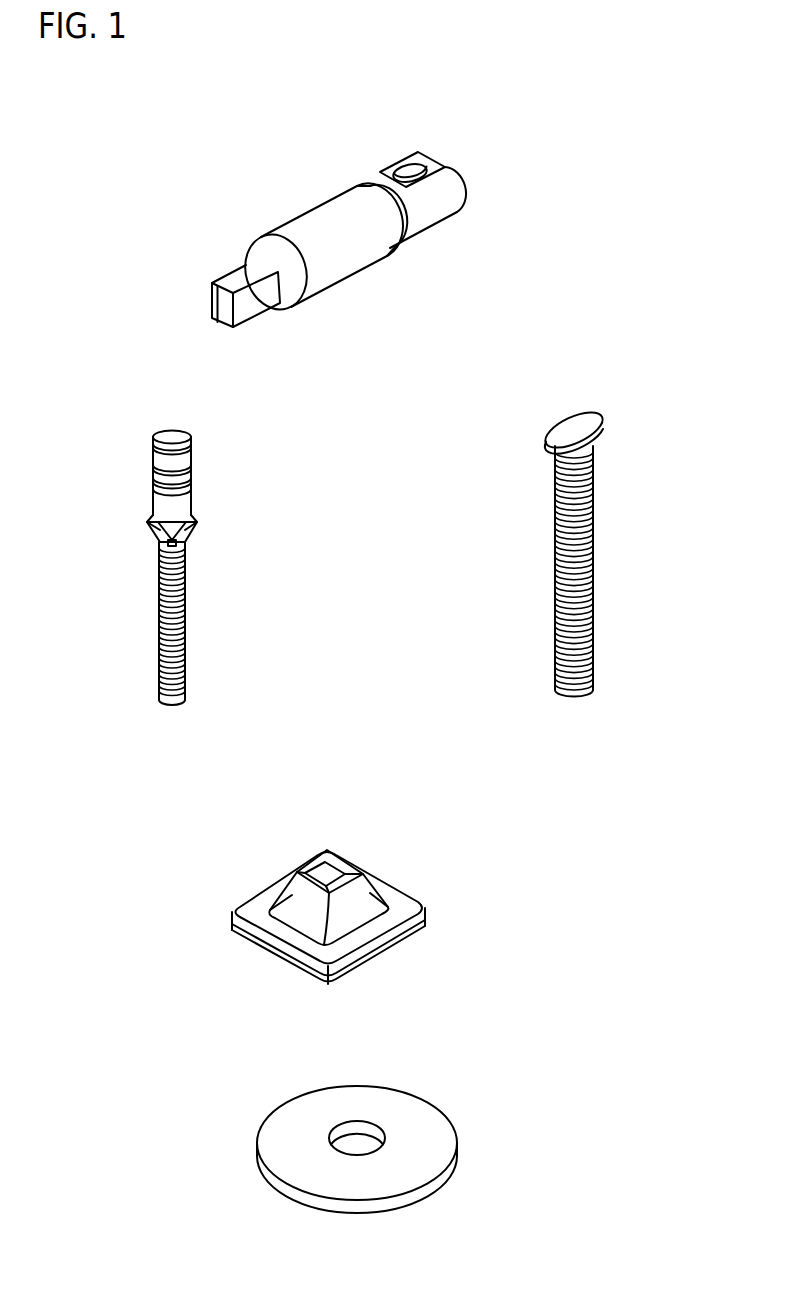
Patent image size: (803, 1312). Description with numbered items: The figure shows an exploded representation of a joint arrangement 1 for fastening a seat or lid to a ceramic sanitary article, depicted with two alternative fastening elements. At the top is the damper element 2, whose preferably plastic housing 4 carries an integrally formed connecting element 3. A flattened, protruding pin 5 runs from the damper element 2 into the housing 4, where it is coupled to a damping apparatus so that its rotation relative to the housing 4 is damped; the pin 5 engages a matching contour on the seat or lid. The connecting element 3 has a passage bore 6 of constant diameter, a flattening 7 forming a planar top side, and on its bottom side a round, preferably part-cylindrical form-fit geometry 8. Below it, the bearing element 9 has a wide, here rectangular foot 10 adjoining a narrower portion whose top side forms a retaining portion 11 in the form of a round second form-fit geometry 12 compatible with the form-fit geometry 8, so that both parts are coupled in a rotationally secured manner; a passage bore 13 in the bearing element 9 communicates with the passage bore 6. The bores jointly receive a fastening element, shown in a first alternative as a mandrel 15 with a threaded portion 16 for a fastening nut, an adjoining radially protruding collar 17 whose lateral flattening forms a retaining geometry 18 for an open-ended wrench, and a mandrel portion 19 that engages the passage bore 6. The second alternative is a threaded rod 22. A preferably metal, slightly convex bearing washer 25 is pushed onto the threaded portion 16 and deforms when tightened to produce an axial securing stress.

The joint arrangement 1 is at (193, 190).
The damper element 2 is at (287, 211).
The connecting element 3 is at (365, 176).
The housing 4 is at (331, 268).
The pin 5 is at (217, 283).
The passage bore 6 is at (411, 172).
The flattening 7 is at (435, 168).
The form-fit geometry 8 is at (439, 229).
The bearing element 9 is at (358, 853).
The foot 10 is at (422, 907).
The retaining portion 11 is at (288, 893).
The second form-fit geometry 12 is at (328, 842).
The passage bore 13 is at (325, 875).
The mandrel 15 is at (148, 515).
The threaded portion 16 is at (168, 662).
The collar 17 is at (196, 538).
The retaining geometry 18 is at (150, 537).
The mandrel portion 19 is at (158, 473).
The threaded rod 22 is at (598, 605).
The bearing washer 25 is at (440, 1122).